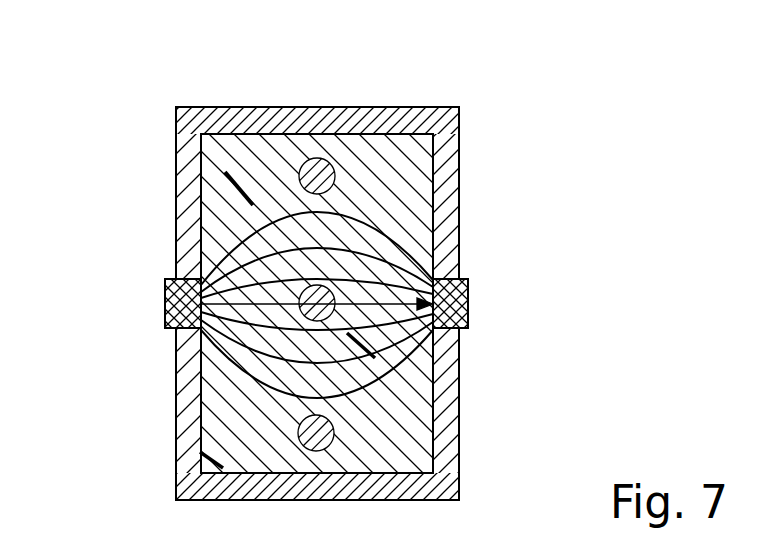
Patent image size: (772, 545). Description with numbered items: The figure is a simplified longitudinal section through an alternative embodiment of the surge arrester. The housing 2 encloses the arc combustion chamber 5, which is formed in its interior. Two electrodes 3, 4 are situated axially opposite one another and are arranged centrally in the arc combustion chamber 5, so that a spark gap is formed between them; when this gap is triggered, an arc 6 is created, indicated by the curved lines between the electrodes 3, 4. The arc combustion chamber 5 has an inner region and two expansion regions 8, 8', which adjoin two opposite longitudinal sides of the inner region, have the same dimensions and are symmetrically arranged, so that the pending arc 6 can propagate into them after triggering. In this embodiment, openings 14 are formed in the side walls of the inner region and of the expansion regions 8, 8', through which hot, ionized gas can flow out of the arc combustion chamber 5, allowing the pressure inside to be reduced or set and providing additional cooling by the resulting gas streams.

The housing 2 is at (370, 108).
The electrode 3 is at (468, 301).
The electrode 4 is at (165, 304).
The arc combustion chamber 5 is at (229, 150).
The arc 6 is at (357, 247).
The expansion region 8 is at (243, 303).
The expansion region 8' is at (165, 498).
The openings 14 is at (335, 168).